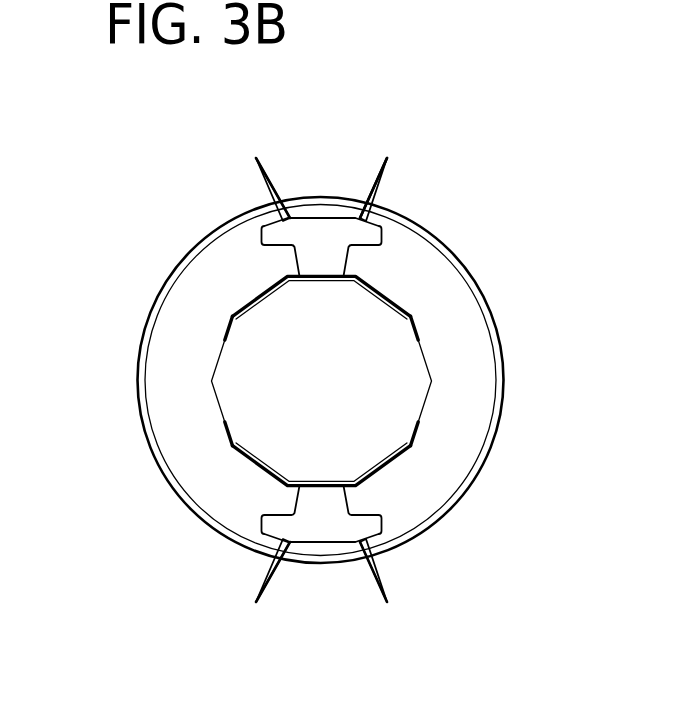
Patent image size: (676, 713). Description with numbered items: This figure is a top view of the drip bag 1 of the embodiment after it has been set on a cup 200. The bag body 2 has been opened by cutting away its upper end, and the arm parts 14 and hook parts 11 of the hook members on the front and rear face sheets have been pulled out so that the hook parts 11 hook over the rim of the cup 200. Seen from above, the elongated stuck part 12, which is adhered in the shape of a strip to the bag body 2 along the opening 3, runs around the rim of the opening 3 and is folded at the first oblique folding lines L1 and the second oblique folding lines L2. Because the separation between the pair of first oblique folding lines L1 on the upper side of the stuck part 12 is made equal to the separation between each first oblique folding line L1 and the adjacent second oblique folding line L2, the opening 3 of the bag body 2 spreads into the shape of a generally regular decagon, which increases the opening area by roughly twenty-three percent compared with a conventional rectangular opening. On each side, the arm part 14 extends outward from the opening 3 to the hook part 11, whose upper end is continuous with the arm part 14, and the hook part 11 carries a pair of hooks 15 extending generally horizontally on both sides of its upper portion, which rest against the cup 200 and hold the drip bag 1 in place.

The drip bag 1 is at (484, 191).
The bag body 2 is at (430, 370).
The opening 3 is at (392, 367).
The hook part 11 is at (385, 193).
The elongated stuck part 12 is at (386, 290).
The arm part 14 is at (327, 245).
The hooks 15 is at (365, 200).
The cup 200 is at (470, 487).
The first oblique folding lines L1 is at (281, 273).
The second oblique folding lines L2 is at (223, 313).